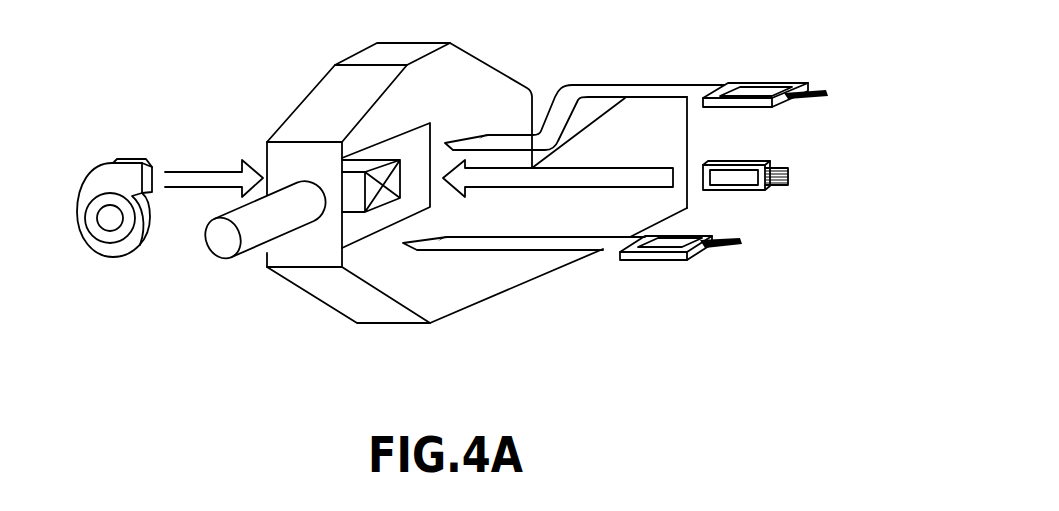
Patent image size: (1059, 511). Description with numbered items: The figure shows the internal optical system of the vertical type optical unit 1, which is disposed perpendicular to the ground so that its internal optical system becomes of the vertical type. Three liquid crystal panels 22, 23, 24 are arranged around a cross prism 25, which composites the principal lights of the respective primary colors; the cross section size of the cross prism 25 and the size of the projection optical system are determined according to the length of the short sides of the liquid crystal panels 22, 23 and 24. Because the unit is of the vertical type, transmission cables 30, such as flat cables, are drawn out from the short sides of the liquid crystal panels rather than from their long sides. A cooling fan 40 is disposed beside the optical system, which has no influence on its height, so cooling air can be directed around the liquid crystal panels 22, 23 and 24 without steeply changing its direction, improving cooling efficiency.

The optical unit 1 is at (542, 63).
The liquid crystal panel 22 is at (698, 234).
The liquid crystal panel 23 is at (740, 161).
The liquid crystal panel 24 is at (766, 82).
The cross prism 25 is at (373, 212).
The transmission cables 30 is at (790, 173).
The cooling fan 40 is at (122, 162).